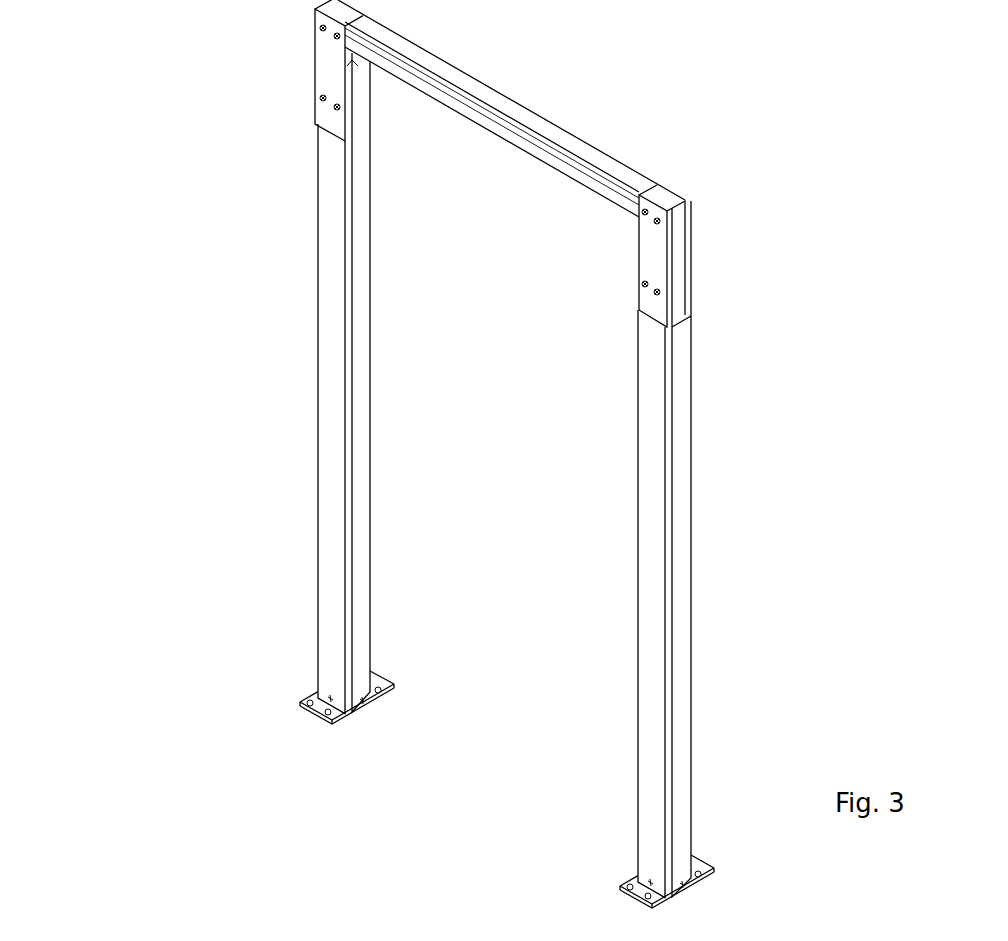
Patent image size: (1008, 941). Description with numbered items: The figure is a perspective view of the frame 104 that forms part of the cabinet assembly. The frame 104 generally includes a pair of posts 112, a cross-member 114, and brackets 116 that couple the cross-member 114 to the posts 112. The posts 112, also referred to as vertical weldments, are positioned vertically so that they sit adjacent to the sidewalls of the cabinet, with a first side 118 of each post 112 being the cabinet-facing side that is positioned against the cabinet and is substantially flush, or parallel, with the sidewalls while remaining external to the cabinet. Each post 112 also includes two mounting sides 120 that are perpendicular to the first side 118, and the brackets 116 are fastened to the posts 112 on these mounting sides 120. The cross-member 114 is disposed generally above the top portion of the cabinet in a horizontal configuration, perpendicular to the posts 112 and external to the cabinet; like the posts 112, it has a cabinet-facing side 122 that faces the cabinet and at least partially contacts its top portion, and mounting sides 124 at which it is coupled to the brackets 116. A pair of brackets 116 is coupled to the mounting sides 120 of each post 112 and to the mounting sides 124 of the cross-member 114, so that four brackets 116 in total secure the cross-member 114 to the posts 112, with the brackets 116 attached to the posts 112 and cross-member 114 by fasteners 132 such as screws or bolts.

The frame 104 is at (91, 289).
The post 112 is at (479, 480).
The cross-member 114 is at (511, 109).
The bracket 116 is at (314, 57).
The first side 118 is at (361, 370).
The mounting side 120 is at (327, 381).
The cabinet-facing side 122 is at (500, 141).
The mounting side 124 is at (558, 172).
The fastener 132 is at (640, 288).